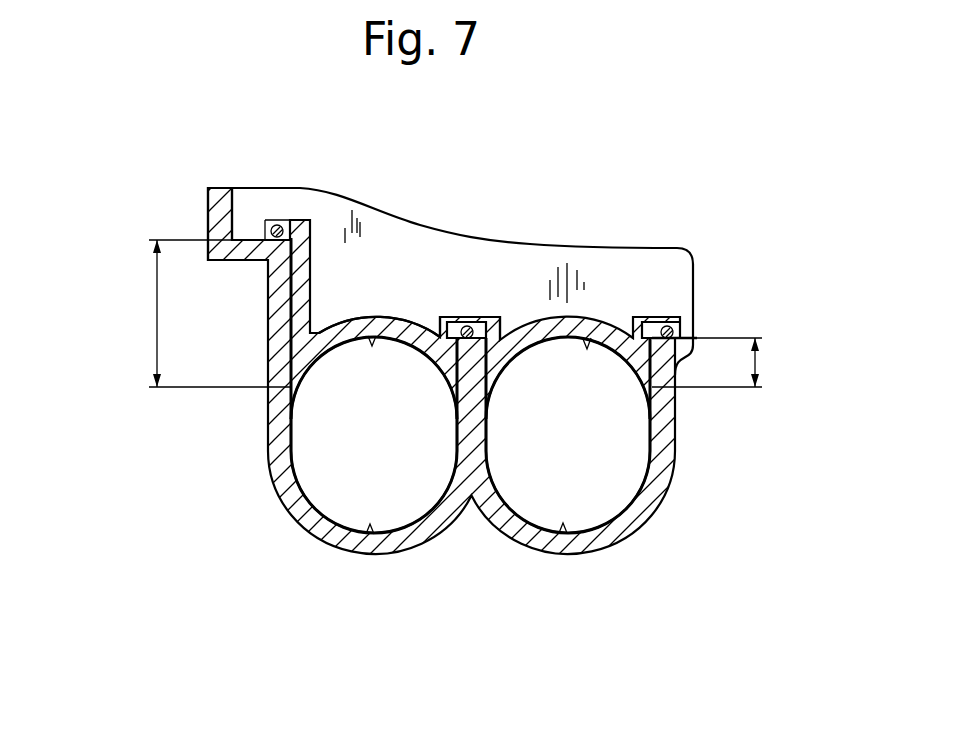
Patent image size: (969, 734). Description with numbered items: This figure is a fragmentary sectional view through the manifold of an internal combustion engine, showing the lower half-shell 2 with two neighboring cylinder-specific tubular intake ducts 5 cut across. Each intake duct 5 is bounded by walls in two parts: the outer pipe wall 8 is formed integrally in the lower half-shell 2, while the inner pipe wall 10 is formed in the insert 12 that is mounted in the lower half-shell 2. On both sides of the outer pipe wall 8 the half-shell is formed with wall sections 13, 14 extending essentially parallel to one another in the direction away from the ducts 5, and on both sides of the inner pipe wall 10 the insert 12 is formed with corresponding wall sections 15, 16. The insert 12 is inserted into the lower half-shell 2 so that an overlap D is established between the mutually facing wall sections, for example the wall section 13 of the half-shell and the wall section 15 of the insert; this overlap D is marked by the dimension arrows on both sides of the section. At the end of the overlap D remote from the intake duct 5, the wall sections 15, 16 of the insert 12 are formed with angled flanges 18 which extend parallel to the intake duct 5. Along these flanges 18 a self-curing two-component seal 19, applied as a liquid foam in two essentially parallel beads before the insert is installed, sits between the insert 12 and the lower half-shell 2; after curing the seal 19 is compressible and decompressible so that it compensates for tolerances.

The lower half-shell 2 is at (608, 533).
The intake duct 5 is at (615, 458).
The outer pipe wall 8 is at (564, 527).
The inner pipe wall 10 is at (587, 343).
The insert 12 is at (405, 333).
The wall section 13 is at (495, 353).
The wall section 14 is at (470, 412).
The wall section 15 is at (643, 320).
The wall section 16 is at (497, 353).
The angled flange 18 is at (667, 327).
The seal 19 is at (680, 325).
The overlap D is at (757, 362).